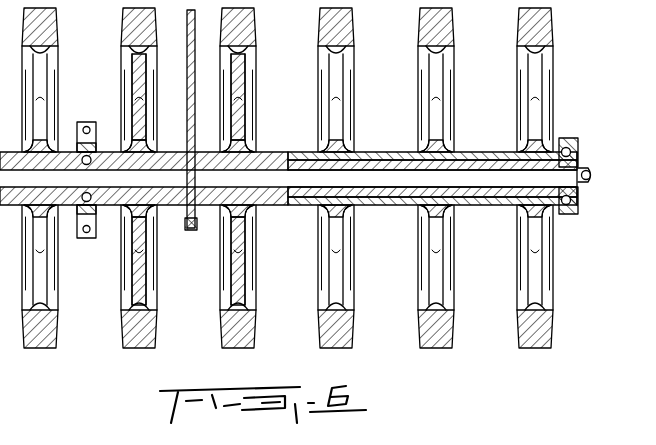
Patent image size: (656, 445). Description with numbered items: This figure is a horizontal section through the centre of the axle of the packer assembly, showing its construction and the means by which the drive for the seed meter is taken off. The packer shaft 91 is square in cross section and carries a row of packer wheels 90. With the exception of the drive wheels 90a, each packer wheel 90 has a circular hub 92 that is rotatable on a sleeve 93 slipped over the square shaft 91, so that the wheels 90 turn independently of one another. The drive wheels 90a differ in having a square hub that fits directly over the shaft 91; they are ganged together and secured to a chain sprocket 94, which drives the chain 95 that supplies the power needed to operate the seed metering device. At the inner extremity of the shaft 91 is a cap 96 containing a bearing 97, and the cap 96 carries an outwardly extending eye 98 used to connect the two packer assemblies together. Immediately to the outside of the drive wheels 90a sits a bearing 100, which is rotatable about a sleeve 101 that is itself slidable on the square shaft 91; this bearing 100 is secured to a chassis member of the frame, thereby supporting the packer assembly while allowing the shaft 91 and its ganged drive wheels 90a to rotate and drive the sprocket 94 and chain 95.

The packer wheel 90 is at (46, 349).
The drive wheel 90a is at (148, 328).
The packer shaft 91 is at (366, 174).
The hub 92 is at (501, 152).
The sleeve 93 is at (492, 205).
The chain sprocket 94 is at (197, 210).
The chain 95 is at (195, 100).
The cap 96 is at (583, 150).
The bearing 97 is at (567, 140).
The eye 98 is at (590, 174).
The bearing 100 is at (77, 147).
The sleeve 101 is at (97, 160).